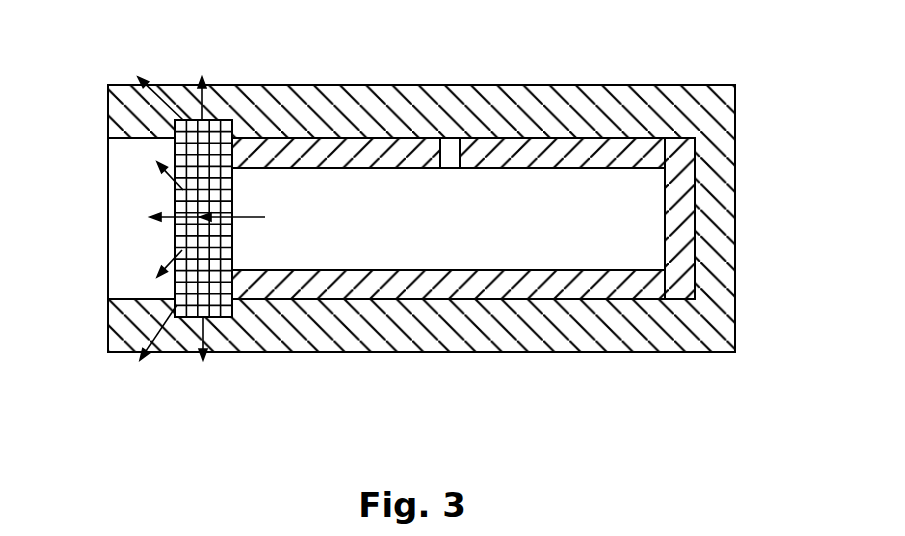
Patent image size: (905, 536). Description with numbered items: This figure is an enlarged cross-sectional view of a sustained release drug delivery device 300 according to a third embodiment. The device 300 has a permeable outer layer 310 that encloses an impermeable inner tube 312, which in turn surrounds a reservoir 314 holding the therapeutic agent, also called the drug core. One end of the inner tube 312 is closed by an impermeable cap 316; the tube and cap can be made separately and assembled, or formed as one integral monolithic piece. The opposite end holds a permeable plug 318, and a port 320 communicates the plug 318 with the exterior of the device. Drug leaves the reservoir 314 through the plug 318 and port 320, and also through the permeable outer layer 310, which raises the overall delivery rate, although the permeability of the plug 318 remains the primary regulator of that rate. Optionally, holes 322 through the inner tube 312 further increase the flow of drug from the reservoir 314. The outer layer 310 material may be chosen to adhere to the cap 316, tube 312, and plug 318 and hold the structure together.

The device 300 is at (751, 48).
The permeable outer layer 310 is at (637, 113).
The impermeable inner tube 312 is at (540, 148).
The reservoir 314 is at (632, 209).
The impermeable cap 316 is at (683, 268).
The permeable plug 318 is at (213, 130).
The port 320 is at (138, 190).
The holes 322 is at (460, 138).